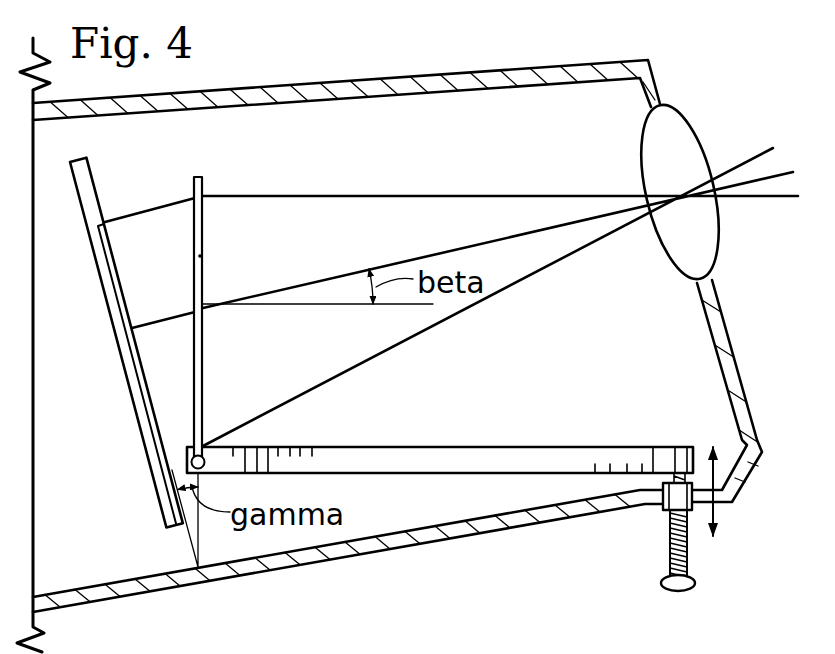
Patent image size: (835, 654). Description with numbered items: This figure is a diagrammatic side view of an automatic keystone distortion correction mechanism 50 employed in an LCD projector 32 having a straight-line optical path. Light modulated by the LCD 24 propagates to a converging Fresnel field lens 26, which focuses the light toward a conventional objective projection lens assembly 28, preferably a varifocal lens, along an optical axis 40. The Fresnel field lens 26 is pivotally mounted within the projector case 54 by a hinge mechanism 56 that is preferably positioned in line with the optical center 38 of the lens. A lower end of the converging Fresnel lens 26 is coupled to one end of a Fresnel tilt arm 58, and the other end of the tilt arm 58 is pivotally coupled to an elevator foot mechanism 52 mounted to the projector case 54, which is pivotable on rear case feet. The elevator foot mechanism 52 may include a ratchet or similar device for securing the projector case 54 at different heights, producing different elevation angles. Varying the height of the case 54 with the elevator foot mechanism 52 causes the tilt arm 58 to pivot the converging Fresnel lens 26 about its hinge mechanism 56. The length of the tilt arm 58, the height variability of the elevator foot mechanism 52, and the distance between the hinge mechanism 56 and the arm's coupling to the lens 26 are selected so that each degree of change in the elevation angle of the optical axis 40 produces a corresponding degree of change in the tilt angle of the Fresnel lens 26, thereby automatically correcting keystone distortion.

The LCD 24 is at (120, 273).
The converging Fresnel field lens 26 is at (203, 210).
The projection lens assembly 28 is at (695, 136).
The LCD projector 32 is at (359, 75).
The optical center 38 is at (202, 256).
The optical axis 40 is at (451, 297).
The automatic keystone distortion correction mechanism 50 is at (391, 427).
The elevator foot mechanism 52 is at (660, 506).
The projector case 54 is at (731, 365).
The hinge mechanism 56 is at (189, 462).
The Fresnel tilt arm 58 is at (396, 462).